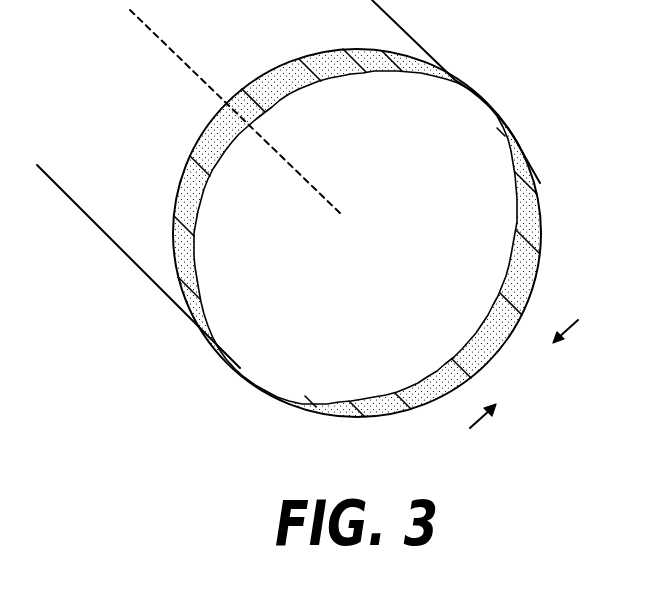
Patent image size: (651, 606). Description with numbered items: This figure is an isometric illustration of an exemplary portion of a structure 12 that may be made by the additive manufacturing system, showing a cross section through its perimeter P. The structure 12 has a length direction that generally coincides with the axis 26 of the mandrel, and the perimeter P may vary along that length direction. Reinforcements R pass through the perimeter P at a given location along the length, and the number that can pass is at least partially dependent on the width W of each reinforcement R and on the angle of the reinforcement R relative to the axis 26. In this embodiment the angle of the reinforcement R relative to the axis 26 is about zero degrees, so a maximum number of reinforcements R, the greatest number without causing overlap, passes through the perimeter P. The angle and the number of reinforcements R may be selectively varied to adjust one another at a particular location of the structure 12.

The structure 12 is at (231, 446).
The axis 26 is at (201, 47).
The perimeter P is at (370, 233).
The width W is at (307, 214).
The reinforcement R is at (188, 257).